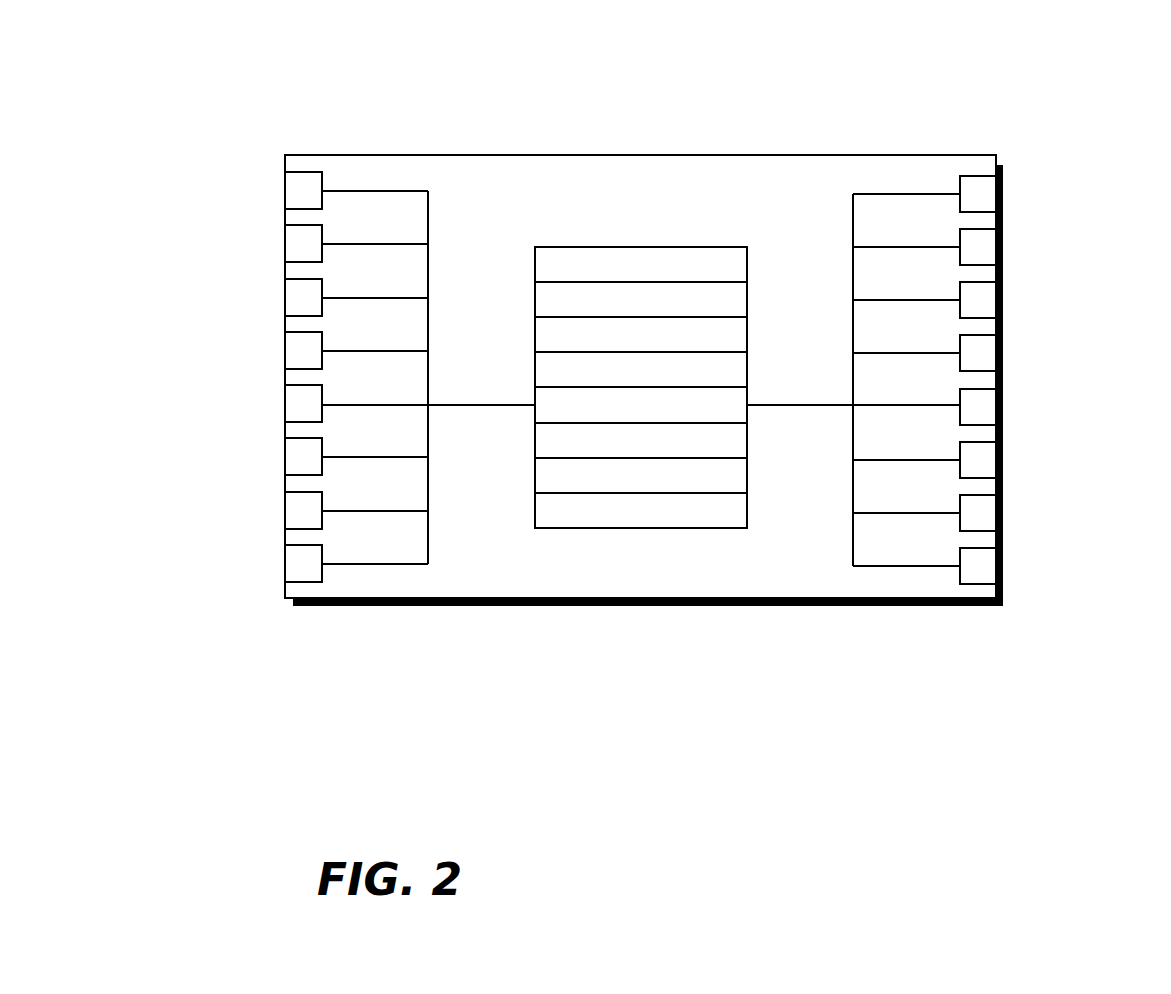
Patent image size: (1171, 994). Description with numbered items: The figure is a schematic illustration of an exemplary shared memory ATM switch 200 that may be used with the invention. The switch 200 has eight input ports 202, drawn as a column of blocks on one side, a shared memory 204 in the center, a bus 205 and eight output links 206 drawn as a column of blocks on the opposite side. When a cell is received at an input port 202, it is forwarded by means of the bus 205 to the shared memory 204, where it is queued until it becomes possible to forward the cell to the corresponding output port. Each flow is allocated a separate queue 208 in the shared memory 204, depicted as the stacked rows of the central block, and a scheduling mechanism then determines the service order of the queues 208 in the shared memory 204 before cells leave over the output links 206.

The shared memory switch 200 is at (964, 65).
The input port 202 is at (283, 190).
The shared memory 204 is at (571, 245).
The bus 205 is at (516, 392).
The output link 206 is at (1001, 241).
The queue 208 is at (649, 530).